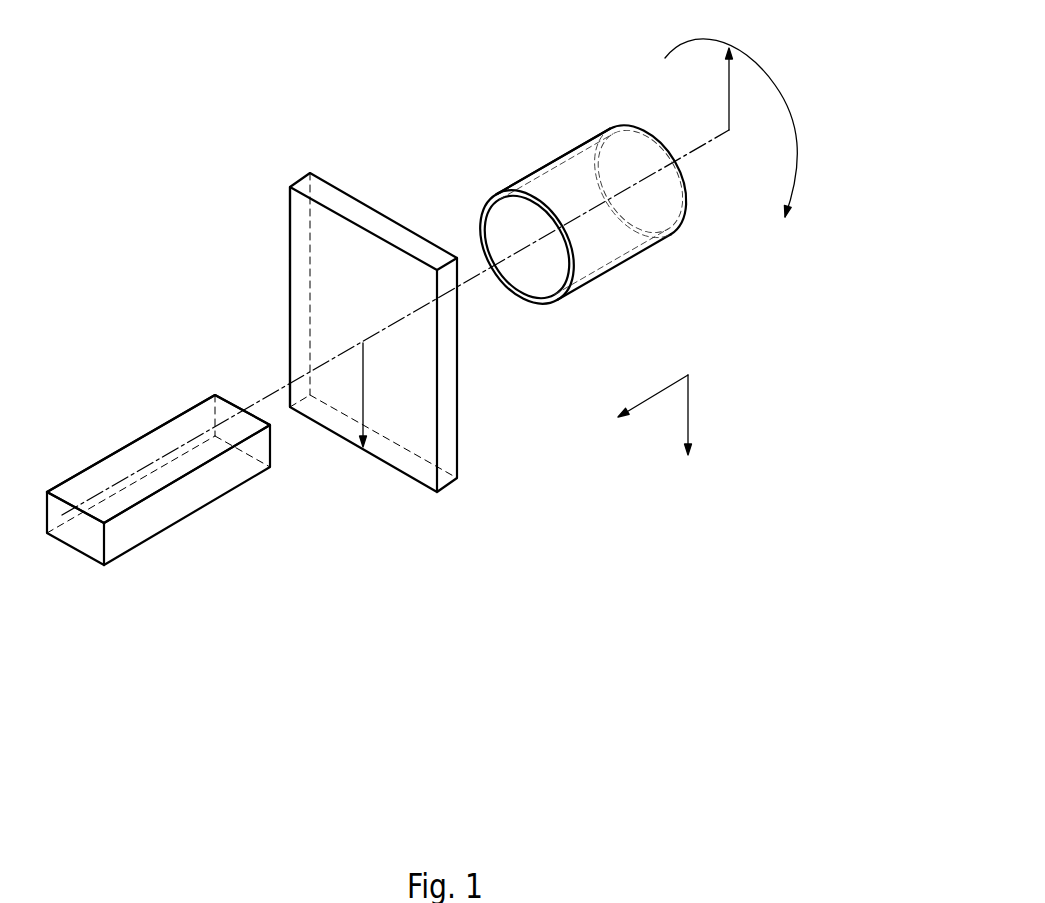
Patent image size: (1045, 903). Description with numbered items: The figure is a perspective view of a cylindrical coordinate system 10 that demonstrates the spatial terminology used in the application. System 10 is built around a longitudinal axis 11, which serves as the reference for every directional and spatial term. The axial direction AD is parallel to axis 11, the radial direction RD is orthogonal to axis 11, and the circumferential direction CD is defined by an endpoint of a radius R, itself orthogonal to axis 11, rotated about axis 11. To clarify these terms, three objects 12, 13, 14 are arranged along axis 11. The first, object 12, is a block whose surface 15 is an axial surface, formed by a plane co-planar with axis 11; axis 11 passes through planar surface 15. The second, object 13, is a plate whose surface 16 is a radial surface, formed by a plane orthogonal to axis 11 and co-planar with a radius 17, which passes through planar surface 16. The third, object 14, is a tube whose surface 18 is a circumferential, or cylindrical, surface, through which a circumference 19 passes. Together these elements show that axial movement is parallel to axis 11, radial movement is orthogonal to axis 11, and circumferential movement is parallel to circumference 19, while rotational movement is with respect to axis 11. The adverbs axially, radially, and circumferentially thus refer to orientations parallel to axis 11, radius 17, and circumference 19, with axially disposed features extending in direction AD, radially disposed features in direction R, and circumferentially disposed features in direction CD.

The cylindrical coordinate system 10 is at (240, 216).
The longitudinal axis 11 is at (668, 157).
The object 12 is at (131, 560).
The object 13 is at (470, 485).
The object 14 is at (612, 284).
The axial surface 15 is at (123, 462).
The radial surface 16 is at (303, 295).
The radius 17 is at (363, 388).
The circumferential surface 18 is at (555, 157).
The circumference 19 is at (480, 213).
The radius R is at (729, 80).
The circumferential direction CD is at (763, 77).
The axial direction AD is at (655, 395).
The radial direction RD is at (690, 410).